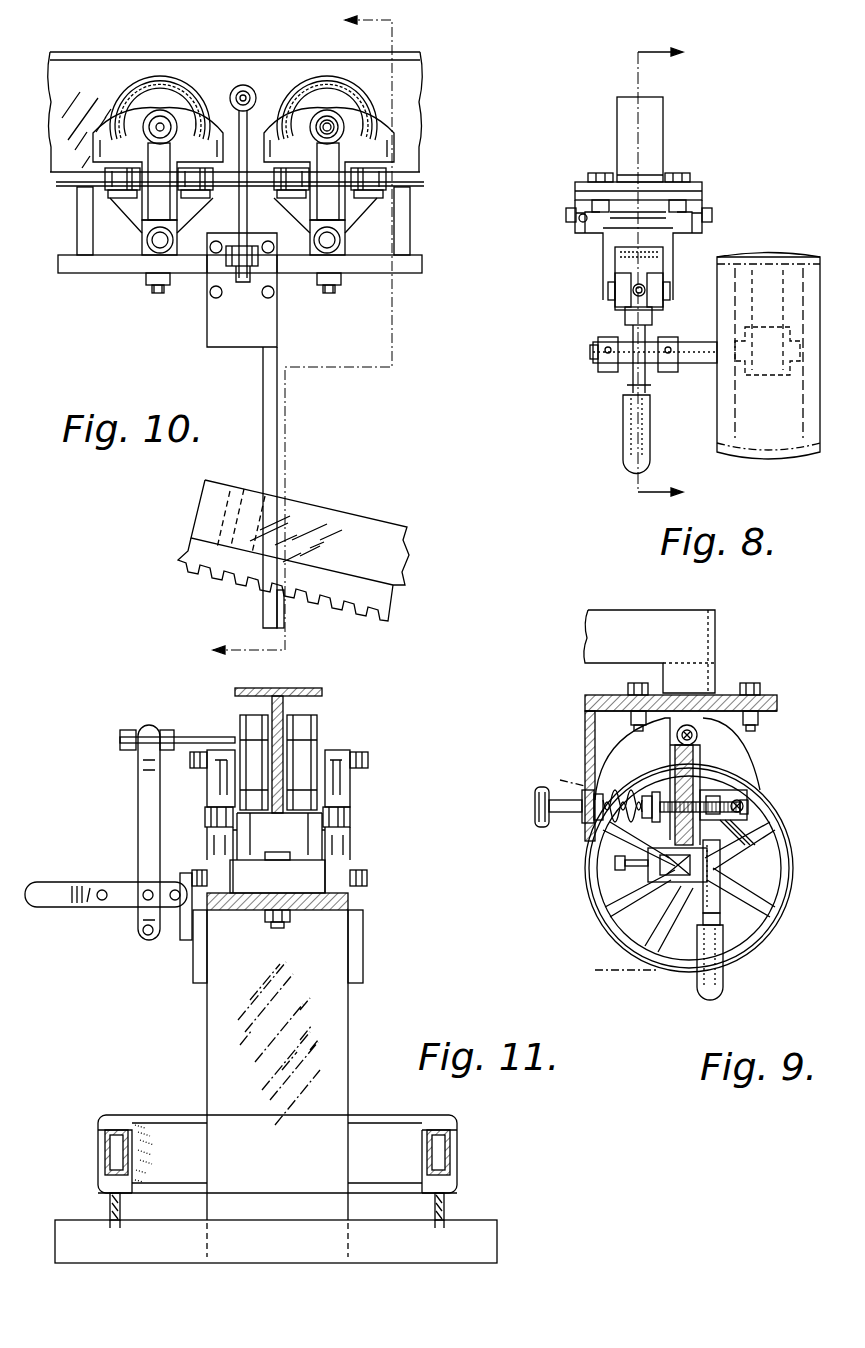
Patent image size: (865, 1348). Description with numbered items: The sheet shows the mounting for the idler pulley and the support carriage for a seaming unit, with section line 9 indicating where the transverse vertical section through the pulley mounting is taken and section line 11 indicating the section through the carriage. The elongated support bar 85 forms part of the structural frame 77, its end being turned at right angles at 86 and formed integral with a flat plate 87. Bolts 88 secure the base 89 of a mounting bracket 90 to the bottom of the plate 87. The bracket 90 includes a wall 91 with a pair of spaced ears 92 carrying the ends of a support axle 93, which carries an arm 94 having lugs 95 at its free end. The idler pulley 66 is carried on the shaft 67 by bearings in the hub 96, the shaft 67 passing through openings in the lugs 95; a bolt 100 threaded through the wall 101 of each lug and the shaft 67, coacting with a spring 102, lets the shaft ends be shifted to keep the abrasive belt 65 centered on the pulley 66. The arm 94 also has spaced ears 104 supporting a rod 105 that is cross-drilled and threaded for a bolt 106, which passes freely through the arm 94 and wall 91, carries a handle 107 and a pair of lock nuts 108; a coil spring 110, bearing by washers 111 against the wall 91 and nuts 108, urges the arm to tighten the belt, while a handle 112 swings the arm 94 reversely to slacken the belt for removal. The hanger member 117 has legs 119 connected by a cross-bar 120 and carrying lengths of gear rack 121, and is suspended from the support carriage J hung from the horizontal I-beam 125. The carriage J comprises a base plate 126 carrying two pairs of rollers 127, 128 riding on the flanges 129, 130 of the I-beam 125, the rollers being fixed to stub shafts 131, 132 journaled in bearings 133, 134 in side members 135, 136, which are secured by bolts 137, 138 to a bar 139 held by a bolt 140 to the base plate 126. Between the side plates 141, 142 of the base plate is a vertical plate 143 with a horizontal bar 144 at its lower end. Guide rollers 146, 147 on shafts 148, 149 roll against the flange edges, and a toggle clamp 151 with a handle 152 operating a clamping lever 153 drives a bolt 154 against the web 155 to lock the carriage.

In FIG. 8, the section line 9— 9 is at (647, 276).
In FIG. 10, the section line 11— 11 is at (319, 336).
In FIG. 8, the abrasive belt 65 is at (760, 292).
In FIG. 9, the abrasive belt 65 is at (672, 975).
In FIG. 8, the idler pulley 66 is at (812, 310).
In FIG. 9, the idler pulley 66 is at (782, 864).
In FIG. 8, the shaft 67 is at (692, 352).
In FIG. 9, the shaft 67 is at (712, 874).
In FIG. 9, the structural frame 77 is at (577, 609).
In FIG. 8, the support bar 85 is at (664, 120).
In FIG. 9, the support bar 85 is at (615, 637).
In FIG. 8, the right-angle turned end 86 is at (634, 125).
In FIG. 9, the right-angle turned end 86 is at (694, 665).
In FIG. 8, the flat plate 87 is at (690, 186).
In FIG. 9, the flat plate 87 is at (778, 704).
In FIG. 8, the bolts 88 is at (601, 173).
In FIG. 9, the bolts 88 is at (632, 688).
In FIG. 8, the base 89 is at (690, 193).
In FIG. 9, the base 89 is at (778, 712).
In FIG. 8, the mounting bracket 90 is at (566, 188).
In FIG. 9, the mounting bracket 90 is at (575, 715).
In FIG. 9, the wall 91 is at (586, 736).
In FIG. 8, the ears 92 is at (575, 205).
In FIG. 9, the ears 92 is at (698, 740).
In FIG. 8, the support axle 93 is at (579, 221).
In FIG. 9, the support axle 93 is at (697, 740).
In FIG. 8, the arm 94 is at (614, 257).
In FIG. 9, the arm 94 is at (700, 780).
In FIG. 8, the lugs 95 is at (604, 375).
In FIG. 8, the hub 96 is at (790, 376).
In FIG. 9, the bolt 100 is at (614, 864).
In FIG. 9, the wall 101 is at (650, 874).
In FIG. 9, the spring 102 is at (664, 878).
In FIG. 8, the ears 104 is at (622, 289).
In FIG. 9, the ears 104 is at (712, 796).
In FIG. 8, the rod 105 is at (617, 297).
In FIG. 9, the rod 105 is at (720, 810).
In FIG. 8, the bolt 106 is at (661, 295).
In FIG. 9, the bolt 106 is at (750, 808).
In FIG. 9, the handle 107 is at (538, 812).
In FIG. 9, the lock nuts 108 is at (662, 800).
In FIG. 9, the coil spring 110 is at (625, 800).
In FIG. 9, the washers 111 is at (598, 826).
In FIG. 8, the handle 112 is at (630, 438).
In FIG. 9, the handle 112 is at (714, 980).
In FIG. 10, the hanger member 117 is at (327, 499).
In FIG. 11, the hanger member 117 is at (99, 1102).
In FIG. 10, the legs 119 is at (345, 533).
In FIG. 11, the legs 119 is at (98, 1152).
In FIG. 10, the cross-bar 120 is at (206, 518).
In FIG. 11, the cross-bar 120 is at (174, 1140).
In FIG. 10, the gear rack 121 is at (230, 565).
In FIG. 11, the gear rack 121 is at (108, 1208).
In FIG. 10, the I-beam 125 is at (424, 83).
In FIG. 11, the I-beam 125 is at (334, 696).
In FIG. 10, the base plate 126 is at (94, 264).
In FIG. 11, the base plate 126 is at (333, 900).
In FIG. 10, the roller 127 is at (156, 95).
In FIG. 10, the roller 128 is at (326, 95).
In FIG. 11, the roller 128 is at (250, 727).
In FIG. 10, the flange 129 is at (410, 180).
In FIG. 11, the flange 129 is at (252, 820).
In FIG. 11, the flange 130 is at (298, 820).
In FIG. 10, the stub shaft 131 is at (150, 121).
In FIG. 10, the stub shaft 132 is at (334, 121).
In FIG. 11, the stub shaft 132 is at (190, 761).
In FIG. 10, the bearing 133 is at (163, 125).
In FIG. 10, the bearing 134 is at (316, 121).
In FIG. 10, the side member 135 is at (120, 143).
In FIG. 10, the side member 136 is at (367, 147).
In FIG. 11, the side member 136 is at (212, 786).
In FIG. 10, the bolt 137 is at (150, 241).
In FIG. 10, the bolt 138 is at (338, 241).
In FIG. 11, the bolt 138 is at (198, 869).
In FIG. 11, the bar 139 is at (258, 880).
In FIG. 10, the bolt 140 is at (152, 292).
In FIG. 11, the bolt 140 is at (282, 927).
In FIG. 10, the side plate 141 is at (226, 331).
In FIG. 11, the side plate 141 is at (196, 968).
In FIG. 11, the side plate 142 is at (356, 956).
In FIG. 10, the vertical plate 143 is at (268, 380).
In FIG. 11, the vertical plate 143 is at (320, 1030).
In FIG. 10, the horizontal bar 144 is at (286, 608).
In FIG. 11, the horizontal bar 144 is at (147, 1243).
In FIG. 10, the guide roller 146 is at (118, 180).
In FIG. 10, the guide roller 147 is at (288, 192).
In FIG. 11, the guide roller 147 is at (212, 818).
In FIG. 10, the shaft 148 is at (96, 172).
In FIG. 10, the shaft 149 is at (403, 166).
In FIG. 10, the toggle clamp 151 is at (276, 274).
In FIG. 11, the toggle clamp 151 is at (112, 855).
In FIG. 10, the handle 152 is at (228, 263).
In FIG. 11, the handle 152 is at (57, 889).
In FIG. 10, the clamping lever 153 is at (249, 160).
In FIG. 11, the clamping lever 153 is at (150, 831).
In FIG. 10, the bolt 154 is at (244, 84).
In FIG. 11, the bolt 154 is at (192, 738).
In FIG. 10, the web 155 is at (400, 118).
In FIG. 11, the web 155 is at (270, 712).
In FIG. 10, the support carriage J is at (109, 290).
In FIG. 11, the support carriage J is at (372, 852).